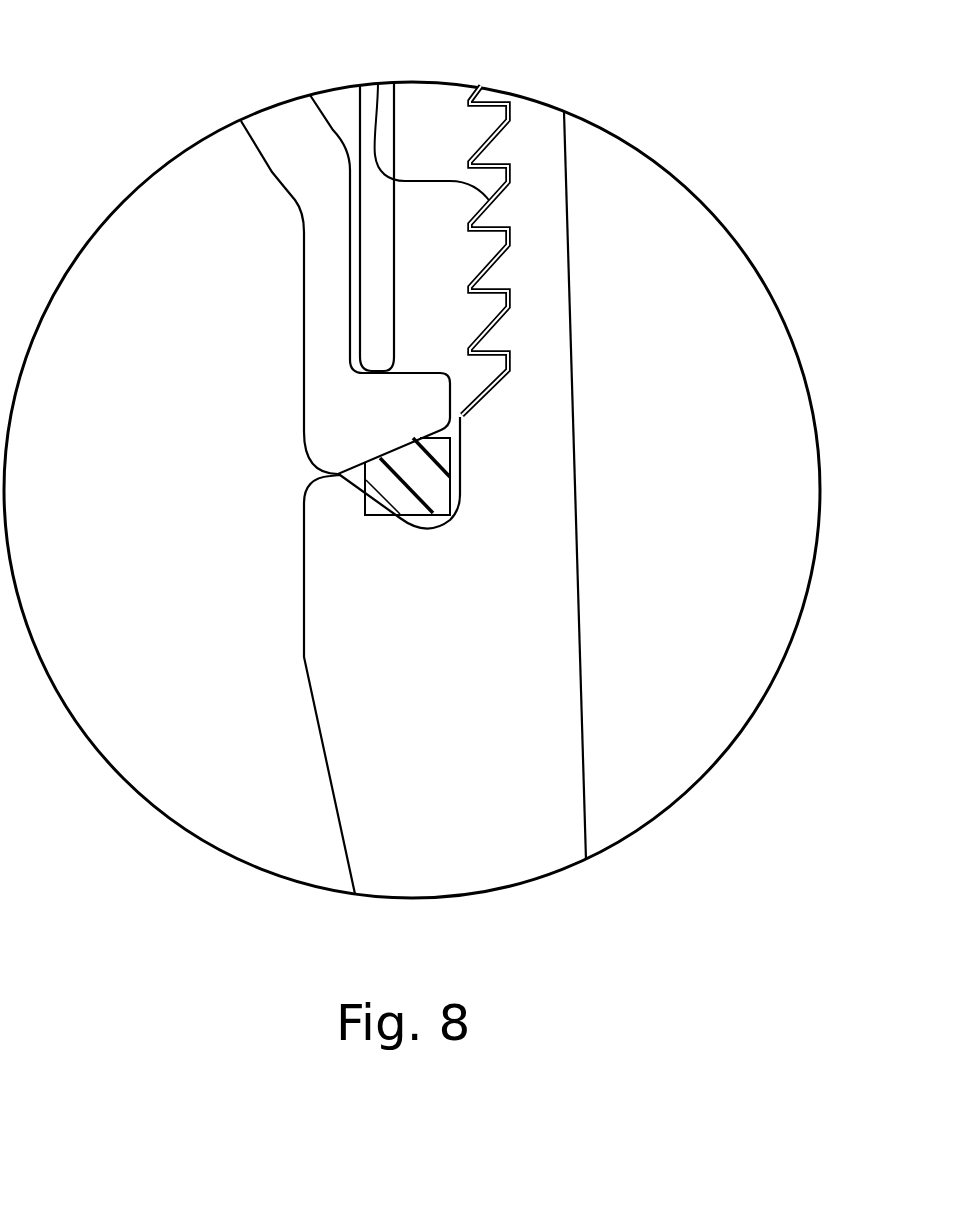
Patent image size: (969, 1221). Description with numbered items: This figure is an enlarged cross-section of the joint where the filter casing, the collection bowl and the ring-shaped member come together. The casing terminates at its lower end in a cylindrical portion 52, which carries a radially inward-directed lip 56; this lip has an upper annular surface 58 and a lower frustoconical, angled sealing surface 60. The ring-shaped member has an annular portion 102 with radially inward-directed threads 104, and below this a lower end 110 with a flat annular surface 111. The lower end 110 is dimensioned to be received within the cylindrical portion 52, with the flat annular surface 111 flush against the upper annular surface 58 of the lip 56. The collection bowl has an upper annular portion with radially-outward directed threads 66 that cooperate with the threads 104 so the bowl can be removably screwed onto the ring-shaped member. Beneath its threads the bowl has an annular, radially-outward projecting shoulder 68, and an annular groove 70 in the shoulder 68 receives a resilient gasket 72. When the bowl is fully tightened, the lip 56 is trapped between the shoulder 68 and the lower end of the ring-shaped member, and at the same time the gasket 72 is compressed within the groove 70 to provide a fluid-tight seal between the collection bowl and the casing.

The cylindrical portion 52 is at (318, 362).
The radially inward-directed lip 56 is at (408, 412).
The upper annular surface 58 is at (388, 375).
The lower frustoconical sealing surface 60 is at (452, 482).
The threads 66 is at (378, 82).
The shoulder 68 is at (320, 585).
The annular groove 70 is at (433, 517).
The resilient gasket 72 is at (422, 490).
The annular portion 102 is at (416, 244).
The radially inward-directed threads 104 is at (503, 196).
The lower end 110 is at (455, 360).
The flat annular surface 111 is at (453, 377).